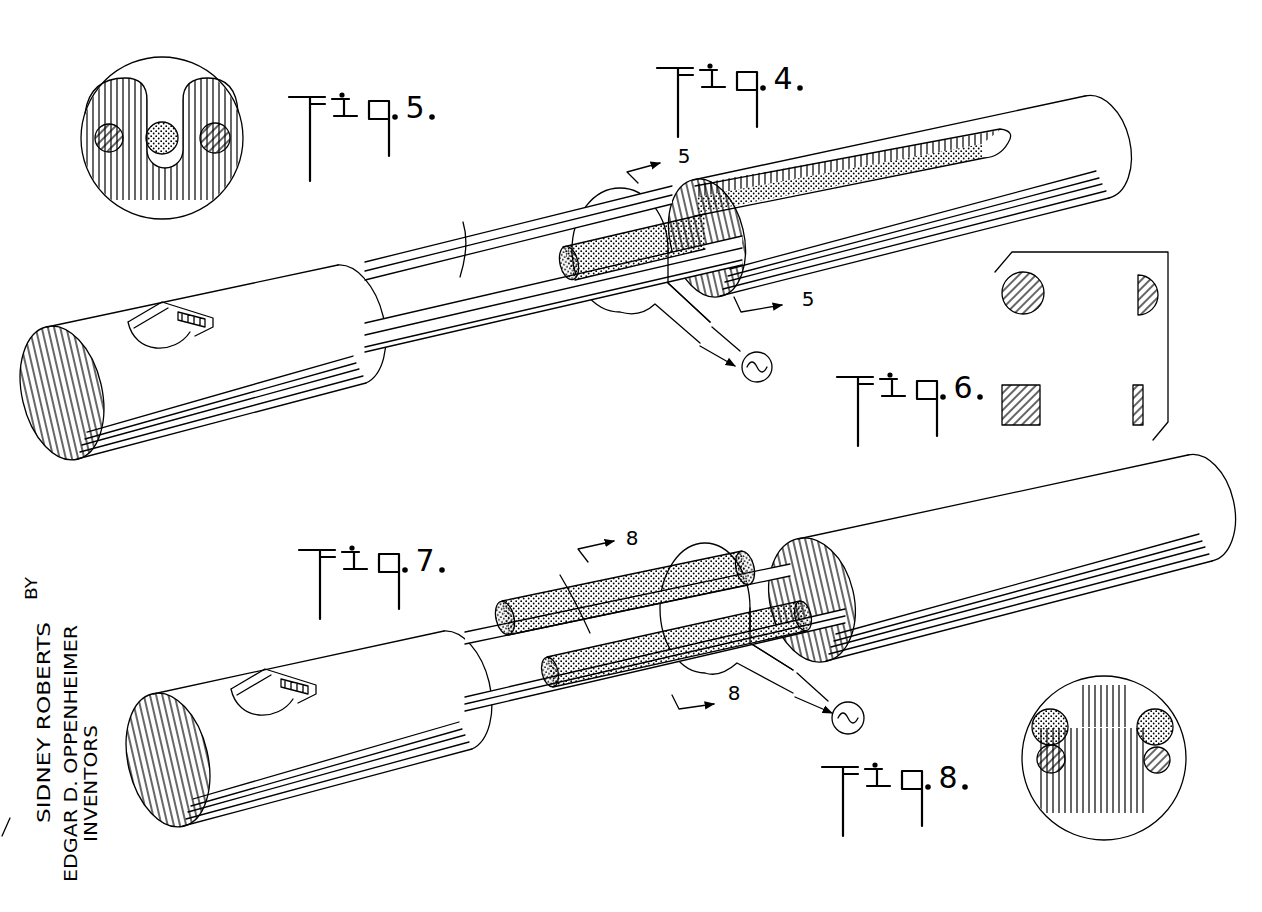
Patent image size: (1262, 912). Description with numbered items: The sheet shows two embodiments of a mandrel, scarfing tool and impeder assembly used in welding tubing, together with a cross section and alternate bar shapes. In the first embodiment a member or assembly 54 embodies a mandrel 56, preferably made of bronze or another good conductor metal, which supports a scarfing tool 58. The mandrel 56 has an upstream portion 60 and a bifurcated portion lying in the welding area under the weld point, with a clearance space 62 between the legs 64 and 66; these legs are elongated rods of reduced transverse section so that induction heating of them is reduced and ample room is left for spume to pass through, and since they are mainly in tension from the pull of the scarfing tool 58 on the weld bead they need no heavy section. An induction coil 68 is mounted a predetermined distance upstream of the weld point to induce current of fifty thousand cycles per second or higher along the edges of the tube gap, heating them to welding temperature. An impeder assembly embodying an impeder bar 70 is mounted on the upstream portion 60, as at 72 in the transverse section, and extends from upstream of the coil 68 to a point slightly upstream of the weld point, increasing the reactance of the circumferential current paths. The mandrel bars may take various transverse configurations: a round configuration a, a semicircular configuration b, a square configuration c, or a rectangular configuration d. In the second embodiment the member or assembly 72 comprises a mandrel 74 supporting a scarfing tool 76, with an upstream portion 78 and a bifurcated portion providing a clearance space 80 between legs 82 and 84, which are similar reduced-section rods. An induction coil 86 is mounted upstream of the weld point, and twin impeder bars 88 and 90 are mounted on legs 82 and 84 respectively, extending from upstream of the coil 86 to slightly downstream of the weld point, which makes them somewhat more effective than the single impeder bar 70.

In FIG. 4, the member or assembly 54 is at (382, 387).
In FIG. 4, the mandrel 56 is at (315, 273).
In FIG. 4, the scarfing tool 58 is at (153, 302).
In FIG. 4, the upstream portion 60 is at (1053, 105).
In FIG. 5, the upstream portion 60 is at (128, 195).
In FIG. 4, the clearance space 62 is at (427, 300).
In FIG. 4, the leg 64 is at (517, 307).
In FIG. 5, the leg 64 is at (229, 144).
In FIG. 4, the leg 66 is at (503, 242).
In FIG. 5, the leg 66 is at (95, 139).
In FIG. 4, the induction coil 68 is at (680, 323).
In FIG. 4, the impeder bar 70 is at (556, 262).
In FIG. 5, the impeder bar 70 is at (164, 122).
In FIG. 5, the mounting of impeder assembly / member or assembly 72 is at (174, 152).
In FIG. 7, the mounting of impeder assembly / member or assembly 72 is at (460, 768).
In FIG. 7, the mandrel 74 is at (382, 660).
In FIG. 7, the scarfing tool 76 is at (258, 670).
In FIG. 7, the upstream portion 78 is at (1053, 590).
In FIG. 8, the upstream portion 78 is at (1121, 698).
In FIG. 7, the clearance space 80 is at (520, 674).
In FIG. 7, the leg 82 is at (510, 720).
In FIG. 8, the leg 82 is at (1170, 763).
In FIG. 7, the leg 84 is at (480, 637).
In FIG. 8, the leg 84 is at (1041, 756).
In FIG. 7, the induction coil 86 is at (778, 688).
In FIG. 7, the impeder bar 88 is at (628, 670).
In FIG. 8, the impeder bar 88 is at (1172, 722).
In FIG. 7, the impeder bar 90 is at (648, 590).
In FIG. 8, the impeder bar 90 is at (1038, 716).
In FIG. 6, the round configuration a is at (1028, 284).
In FIG. 6, the semicircular configuration b is at (1137, 286).
In FIG. 6, the square configuration c is at (1032, 392).
In FIG. 6, the rectangular configuration d is at (1130, 393).